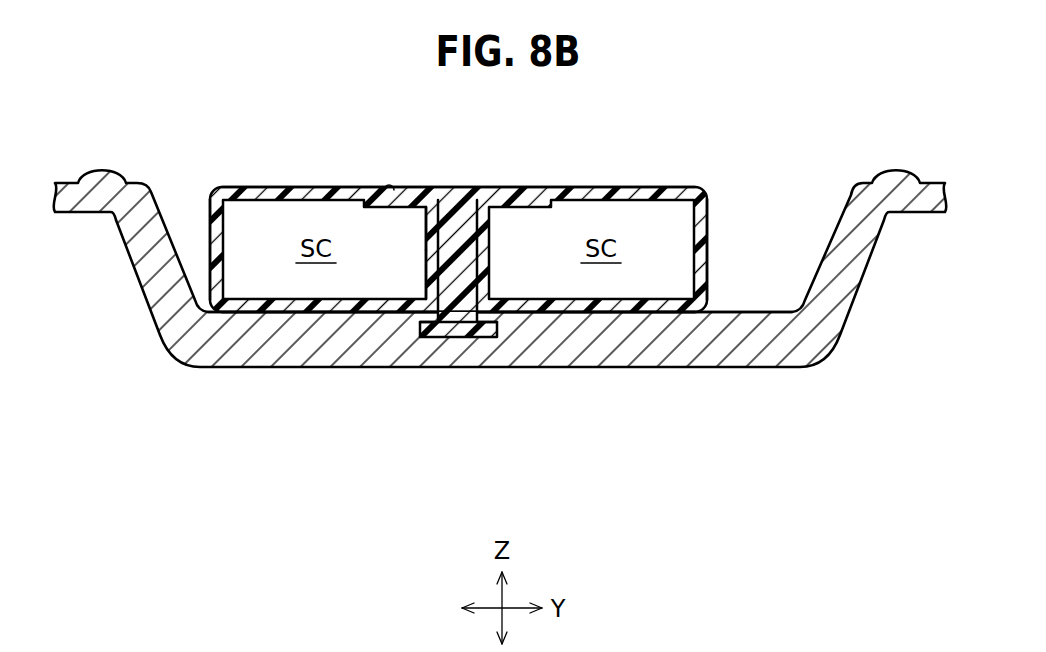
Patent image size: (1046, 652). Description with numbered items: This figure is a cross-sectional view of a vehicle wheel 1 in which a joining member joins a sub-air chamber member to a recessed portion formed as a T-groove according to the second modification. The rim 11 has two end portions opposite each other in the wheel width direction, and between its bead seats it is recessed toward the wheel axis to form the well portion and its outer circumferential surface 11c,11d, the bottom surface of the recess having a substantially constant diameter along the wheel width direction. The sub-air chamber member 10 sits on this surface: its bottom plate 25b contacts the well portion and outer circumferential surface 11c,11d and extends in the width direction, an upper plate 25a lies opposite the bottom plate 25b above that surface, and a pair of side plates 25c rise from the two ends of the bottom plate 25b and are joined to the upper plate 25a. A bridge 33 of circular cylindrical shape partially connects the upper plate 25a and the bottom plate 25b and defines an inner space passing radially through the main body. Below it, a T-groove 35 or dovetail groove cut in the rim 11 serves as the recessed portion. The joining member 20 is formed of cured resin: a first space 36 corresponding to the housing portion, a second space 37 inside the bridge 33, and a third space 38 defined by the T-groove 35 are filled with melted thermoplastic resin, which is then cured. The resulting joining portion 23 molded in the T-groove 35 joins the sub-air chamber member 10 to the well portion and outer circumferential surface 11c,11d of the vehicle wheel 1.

The vehicle wheel 1 is at (496, 137).
The sub-air chamber member 10 is at (669, 187).
The rim 11 is at (133, 181).
The well portion and outer circumferential surface 11c,11d is at (283, 310).
The joining member 20 is at (462, 245).
The joining portion 23 is at (448, 334).
The upper plate 25a is at (280, 187).
The bottom plate 25b is at (623, 308).
The side plates 25c is at (223, 229).
The bridge 33 is at (432, 253).
The T-groove 35 is at (488, 332).
The first space 36 is at (388, 182).
The second space 37 is at (445, 243).
The third space 38 is at (428, 330).